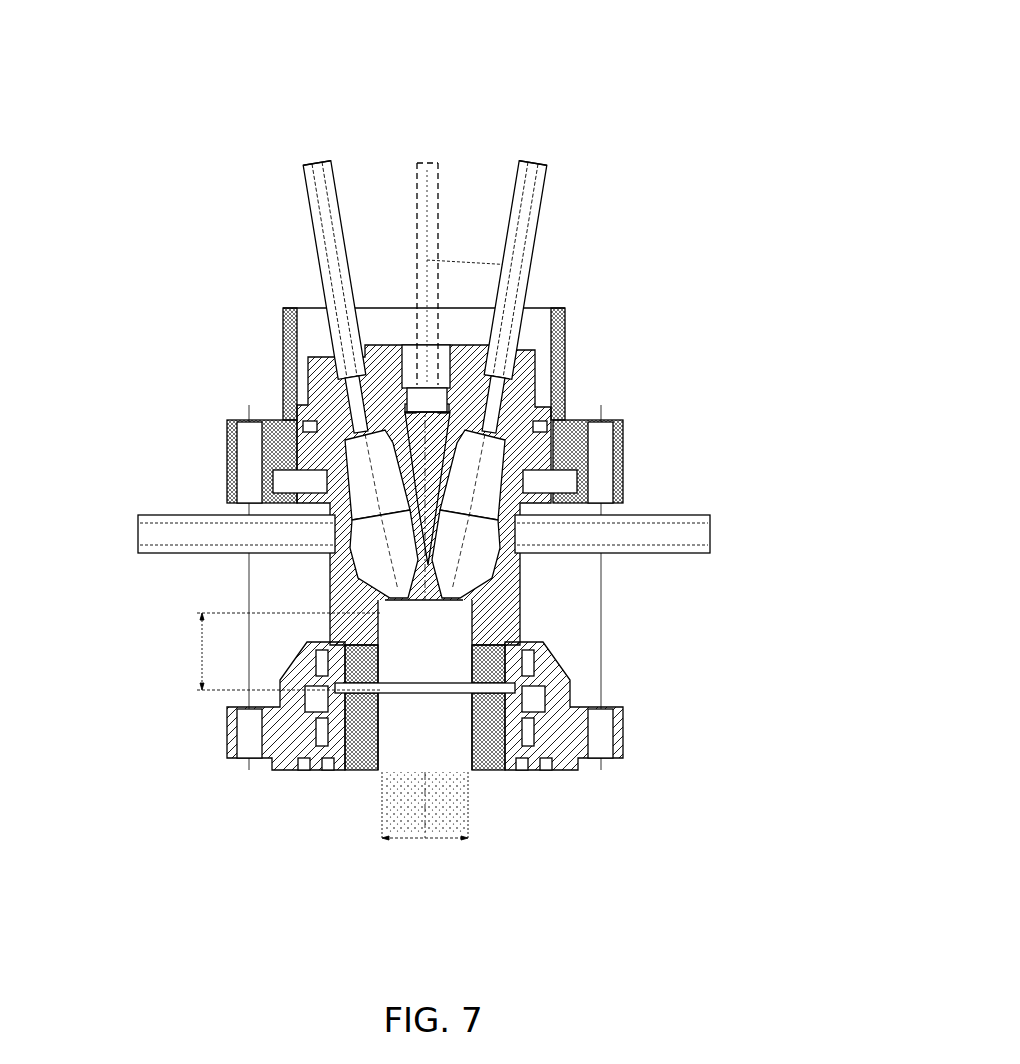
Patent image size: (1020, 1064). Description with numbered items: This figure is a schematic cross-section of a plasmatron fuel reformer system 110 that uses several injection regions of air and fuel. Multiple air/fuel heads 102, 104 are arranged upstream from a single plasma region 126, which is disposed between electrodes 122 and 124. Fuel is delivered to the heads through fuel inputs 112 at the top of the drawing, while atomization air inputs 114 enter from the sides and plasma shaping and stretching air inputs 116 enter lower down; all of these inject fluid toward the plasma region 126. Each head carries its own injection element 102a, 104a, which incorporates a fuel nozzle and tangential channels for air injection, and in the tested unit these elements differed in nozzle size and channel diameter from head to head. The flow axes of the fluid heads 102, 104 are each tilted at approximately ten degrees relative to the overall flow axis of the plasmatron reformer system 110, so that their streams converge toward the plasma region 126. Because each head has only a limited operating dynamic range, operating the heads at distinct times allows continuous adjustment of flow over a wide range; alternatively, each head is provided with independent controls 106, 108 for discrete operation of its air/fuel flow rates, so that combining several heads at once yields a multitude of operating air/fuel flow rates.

The air/fuel head 102 is at (358, 450).
The injection element 102a is at (387, 600).
The air/fuel head 104 is at (485, 455).
The injection element 104a is at (527, 600).
The independent control 106 is at (322, 340).
The independent control 108 is at (530, 340).
The plasmatron reformer system 110 is at (755, 184).
The fuel inputs 112 is at (331, 180).
The atomization air inputs 114 is at (300, 528).
The plasma shaping and stretching air inputs 116 is at (497, 687).
The electrode 122 is at (366, 678).
The electrode 124 is at (378, 712).
The plasma region 126 is at (427, 710).